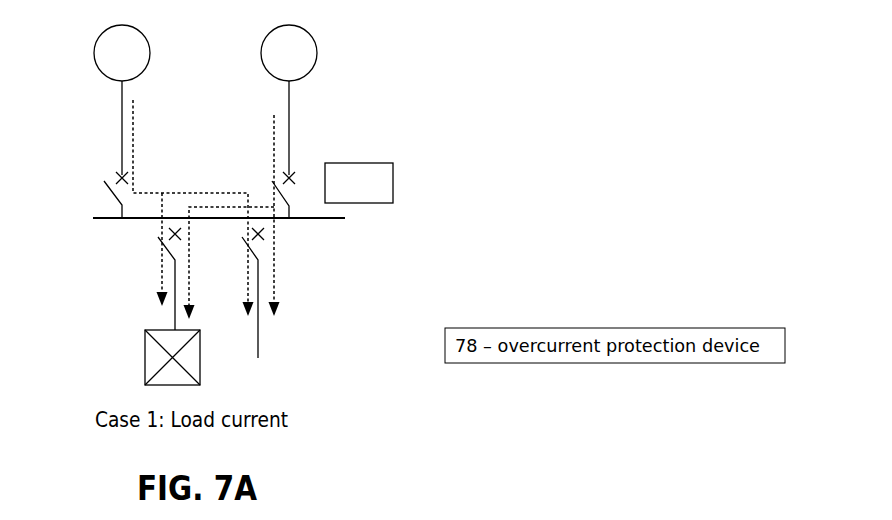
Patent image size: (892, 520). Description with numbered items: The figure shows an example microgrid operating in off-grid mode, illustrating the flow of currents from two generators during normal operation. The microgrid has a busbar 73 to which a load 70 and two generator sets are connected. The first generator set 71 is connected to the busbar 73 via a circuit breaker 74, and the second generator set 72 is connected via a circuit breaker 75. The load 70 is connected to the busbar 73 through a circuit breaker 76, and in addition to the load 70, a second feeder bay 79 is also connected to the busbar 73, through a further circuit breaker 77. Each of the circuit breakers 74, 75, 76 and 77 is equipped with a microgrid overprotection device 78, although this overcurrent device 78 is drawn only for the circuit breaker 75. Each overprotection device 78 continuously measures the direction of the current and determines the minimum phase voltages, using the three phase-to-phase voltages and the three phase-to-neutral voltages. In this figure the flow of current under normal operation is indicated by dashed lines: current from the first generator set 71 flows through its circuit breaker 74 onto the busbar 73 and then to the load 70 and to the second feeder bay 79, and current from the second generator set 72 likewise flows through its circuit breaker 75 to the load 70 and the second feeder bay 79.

The load 70 is at (151, 357).
The first generator set 71 is at (111, 90).
The second generator set 72 is at (280, 88).
The busbar 73 is at (198, 219).
The circuit breaker 74 is at (102, 184).
The circuit breaker 75 is at (266, 184).
The circuit breaker 76 is at (148, 278).
The circuit breaker 77 is at (279, 279).
The microgrid overprotection device 78 is at (359, 183).
The second feeder bay 79 is at (279, 352).